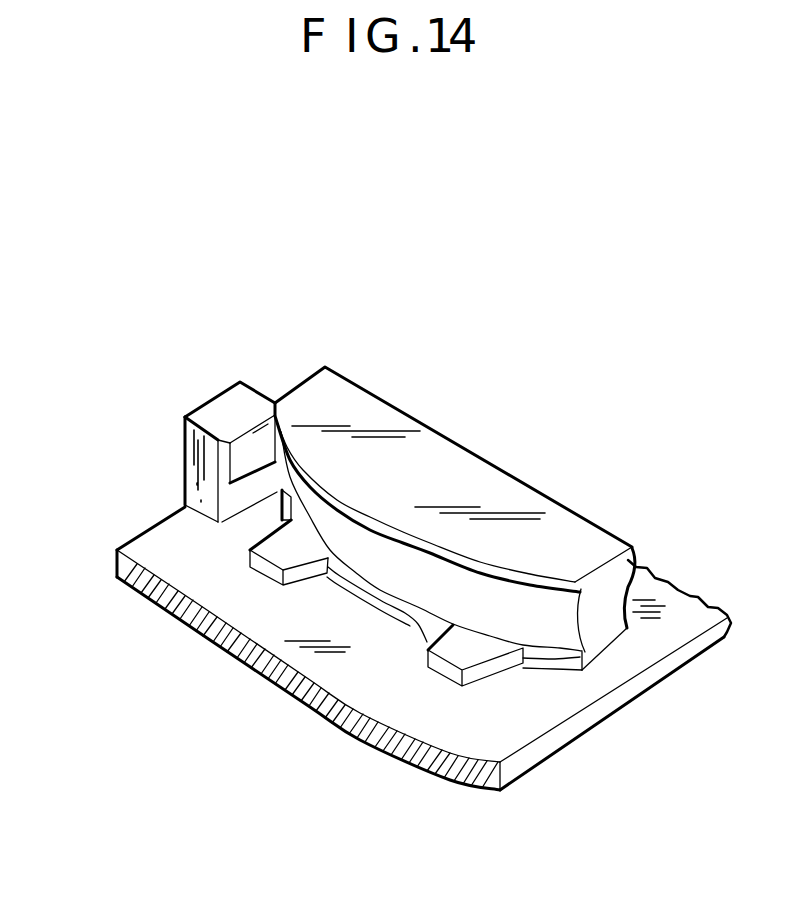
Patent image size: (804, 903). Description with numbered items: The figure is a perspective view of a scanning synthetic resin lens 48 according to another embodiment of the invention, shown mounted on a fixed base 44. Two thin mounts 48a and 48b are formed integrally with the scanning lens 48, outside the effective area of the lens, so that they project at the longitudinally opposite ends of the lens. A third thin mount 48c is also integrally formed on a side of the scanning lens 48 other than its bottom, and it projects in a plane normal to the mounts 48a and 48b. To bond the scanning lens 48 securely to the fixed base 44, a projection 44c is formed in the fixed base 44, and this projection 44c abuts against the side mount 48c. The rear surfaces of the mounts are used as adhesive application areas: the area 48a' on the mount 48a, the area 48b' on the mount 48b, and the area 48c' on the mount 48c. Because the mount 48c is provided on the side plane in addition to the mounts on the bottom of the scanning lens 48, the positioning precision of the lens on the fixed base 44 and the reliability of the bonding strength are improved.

The fixed base 44 is at (642, 682).
The projection 44c is at (185, 497).
The scanning lens 48 is at (498, 478).
The thin mount 48a is at (411, 702).
The adhesive application area 48a' is at (568, 721).
The thin mount 48b is at (241, 596).
The adhesive application area 48b' is at (198, 534).
The thin mount 48c is at (295, 386).
The adhesive application area 48c' is at (256, 385).